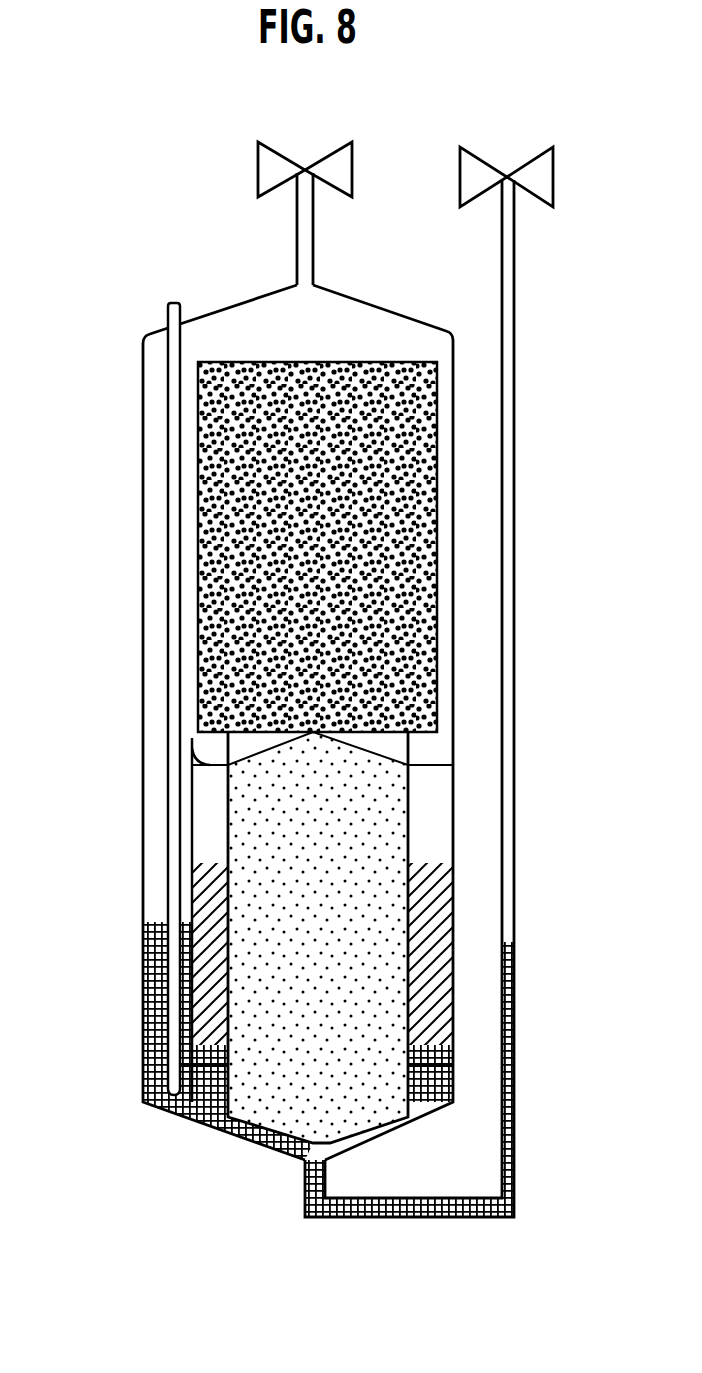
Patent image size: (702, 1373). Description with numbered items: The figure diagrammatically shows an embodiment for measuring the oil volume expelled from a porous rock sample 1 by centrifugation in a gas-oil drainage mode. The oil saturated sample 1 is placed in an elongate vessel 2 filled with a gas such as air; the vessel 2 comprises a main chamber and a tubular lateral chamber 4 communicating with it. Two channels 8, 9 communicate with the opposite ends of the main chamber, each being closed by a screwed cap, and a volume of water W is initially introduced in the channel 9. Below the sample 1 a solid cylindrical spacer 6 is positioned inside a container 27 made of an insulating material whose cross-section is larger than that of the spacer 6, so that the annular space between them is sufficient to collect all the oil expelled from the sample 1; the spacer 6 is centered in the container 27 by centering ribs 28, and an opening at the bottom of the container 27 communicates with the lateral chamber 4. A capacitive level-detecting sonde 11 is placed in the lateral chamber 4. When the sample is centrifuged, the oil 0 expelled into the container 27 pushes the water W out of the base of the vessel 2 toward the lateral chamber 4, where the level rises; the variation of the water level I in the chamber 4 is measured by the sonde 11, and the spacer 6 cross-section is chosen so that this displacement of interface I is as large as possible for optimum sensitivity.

The channel 8 is at (297, 230).
The tubular lateral chamber 4 is at (157, 497).
The level-detecting sonde 11 is at (168, 440).
The porous rock sample 1 is at (267, 537).
The spacer 6 is at (240, 835).
The container 27 is at (192, 790).
The centering ribs 28 is at (210, 762).
The oil 0 is at (435, 935).
The water level I is at (143, 950).
The vessel 2 is at (143, 1042).
The water W is at (209, 1097).
The channel 9 is at (490, 1218).